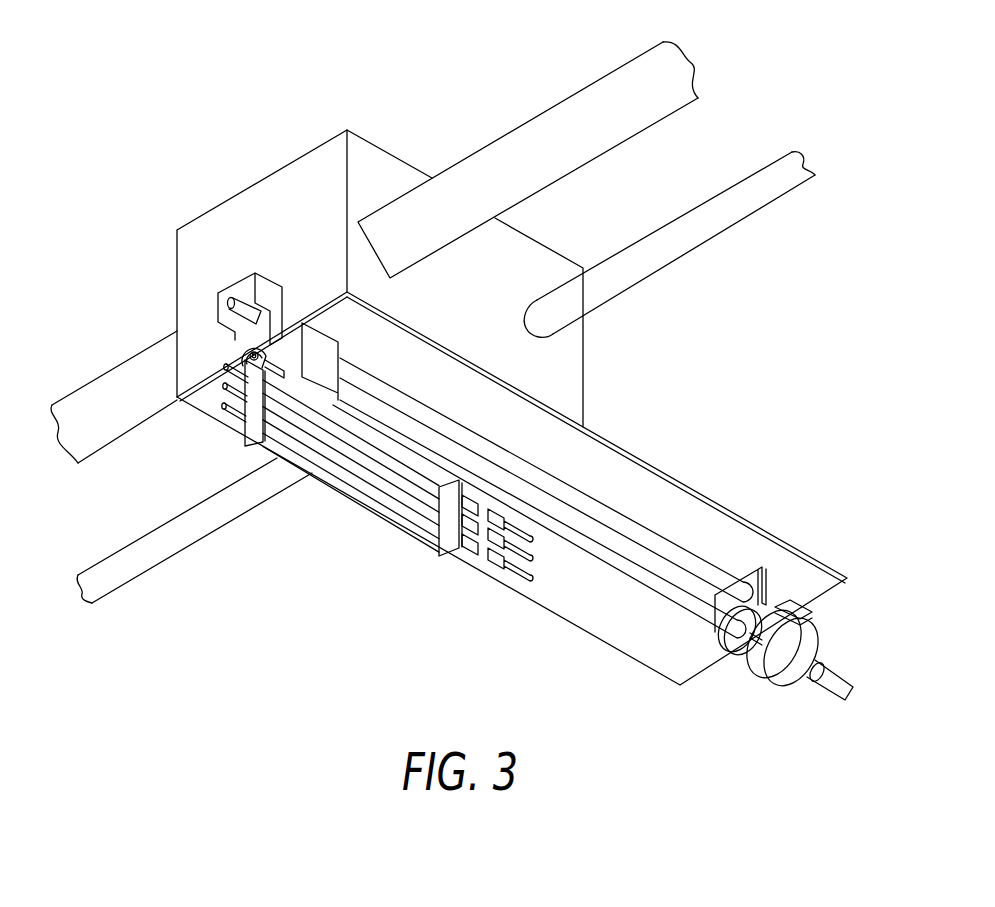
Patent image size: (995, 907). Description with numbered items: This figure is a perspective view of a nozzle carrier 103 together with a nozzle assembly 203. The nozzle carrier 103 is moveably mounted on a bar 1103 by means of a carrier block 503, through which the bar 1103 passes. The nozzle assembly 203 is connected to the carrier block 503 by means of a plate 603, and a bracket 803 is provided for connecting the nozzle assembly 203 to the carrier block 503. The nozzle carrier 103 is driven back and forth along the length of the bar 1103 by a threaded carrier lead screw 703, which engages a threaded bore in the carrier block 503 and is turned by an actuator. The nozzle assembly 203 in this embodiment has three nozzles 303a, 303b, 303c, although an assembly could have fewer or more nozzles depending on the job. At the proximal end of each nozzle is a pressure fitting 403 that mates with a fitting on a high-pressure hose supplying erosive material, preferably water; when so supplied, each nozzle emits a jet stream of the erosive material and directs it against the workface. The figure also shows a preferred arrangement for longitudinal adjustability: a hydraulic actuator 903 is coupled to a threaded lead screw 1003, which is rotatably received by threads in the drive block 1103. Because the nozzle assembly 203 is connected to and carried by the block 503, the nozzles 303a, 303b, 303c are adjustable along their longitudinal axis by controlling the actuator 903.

The nozzle carrier 103 is at (178, 148).
The nozzle assembly 203 is at (374, 554).
The nozzle 303a is at (224, 405).
The nozzle 303b is at (224, 386).
The nozzle 303c is at (226, 366).
The pressure fitting 403 is at (528, 592).
The carrier block 503 is at (300, 156).
The plate 603 is at (812, 557).
The threaded carrier lead screw 703 is at (741, 222).
The bracket 803 is at (268, 282).
The hydraulic actuator 903 is at (760, 688).
The threaded lead screw 1003 is at (682, 622).
The bar 1103 is at (577, 125).